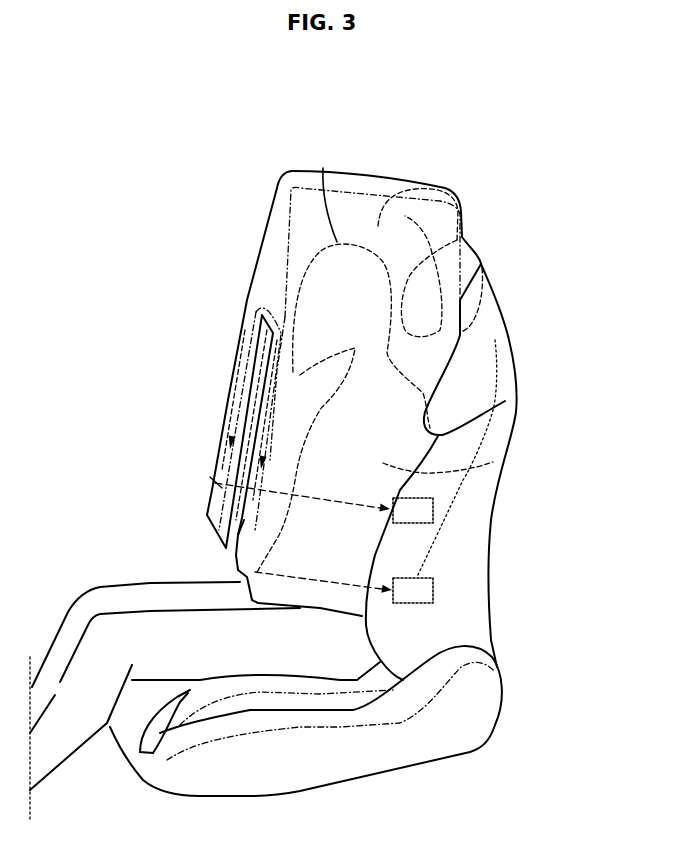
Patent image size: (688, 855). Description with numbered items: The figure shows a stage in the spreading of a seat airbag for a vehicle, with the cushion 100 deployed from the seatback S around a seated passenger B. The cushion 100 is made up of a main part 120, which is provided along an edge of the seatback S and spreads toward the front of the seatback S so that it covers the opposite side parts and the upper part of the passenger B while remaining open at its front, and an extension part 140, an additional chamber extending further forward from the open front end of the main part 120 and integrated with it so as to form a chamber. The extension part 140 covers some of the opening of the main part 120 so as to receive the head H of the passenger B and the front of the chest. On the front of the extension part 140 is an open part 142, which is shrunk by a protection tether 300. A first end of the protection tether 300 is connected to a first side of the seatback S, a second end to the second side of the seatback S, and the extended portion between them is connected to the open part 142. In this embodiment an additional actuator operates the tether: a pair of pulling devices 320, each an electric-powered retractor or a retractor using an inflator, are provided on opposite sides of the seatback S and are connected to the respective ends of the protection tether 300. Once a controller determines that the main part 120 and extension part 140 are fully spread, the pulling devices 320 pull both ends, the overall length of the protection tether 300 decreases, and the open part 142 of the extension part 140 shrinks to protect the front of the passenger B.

The cushion 100 is at (476, 197).
The main part 120 is at (382, 177).
The extension part 140 is at (273, 266).
The open part 142 is at (258, 405).
The protection tether 300 is at (230, 468).
The pulling device 320 is at (433, 592).
The head H is at (323, 168).
The passenger B is at (493, 462).
The seatback S is at (473, 543).